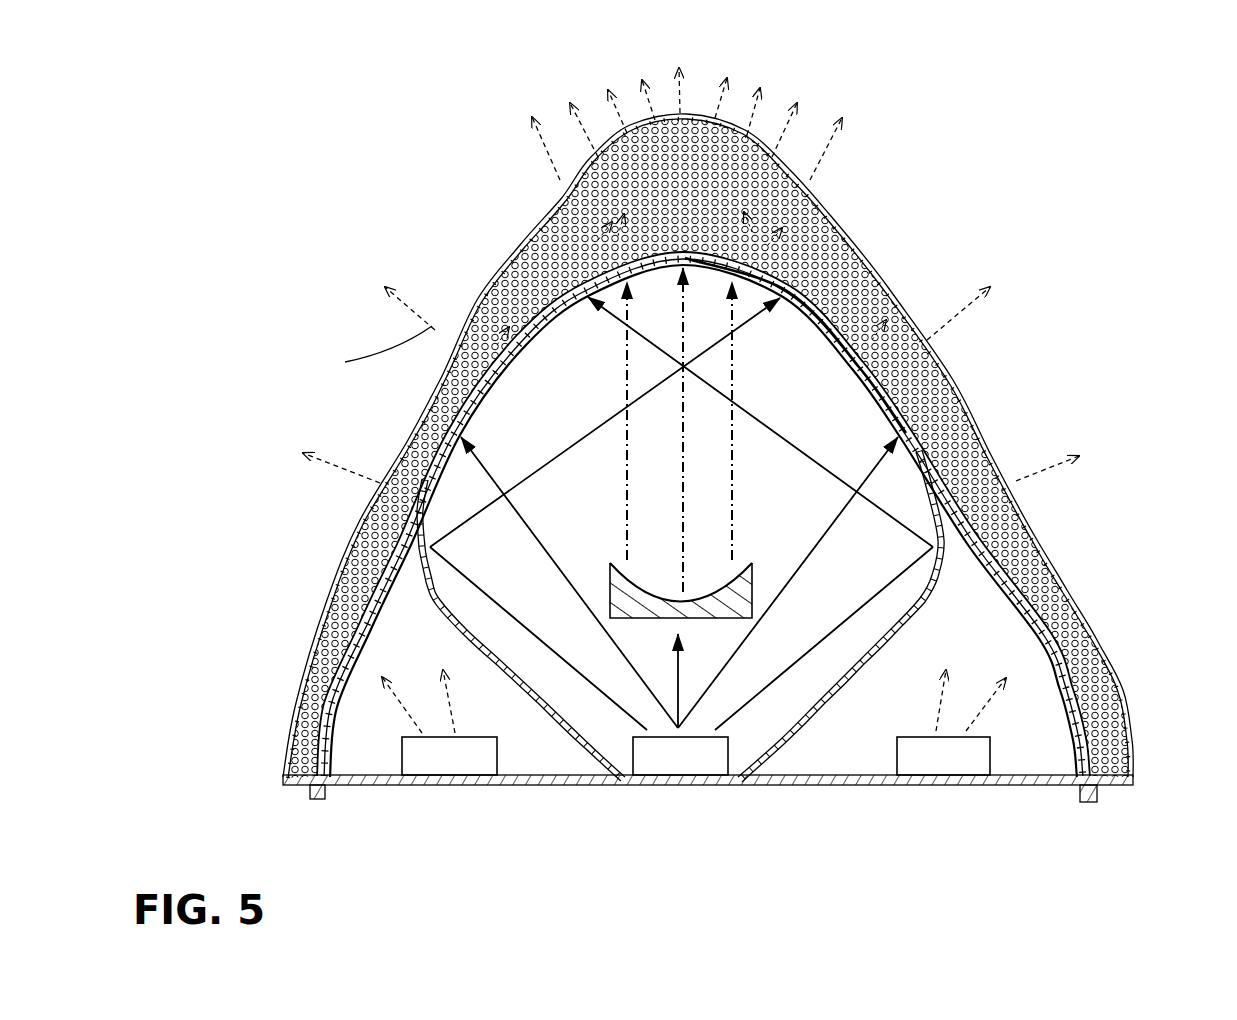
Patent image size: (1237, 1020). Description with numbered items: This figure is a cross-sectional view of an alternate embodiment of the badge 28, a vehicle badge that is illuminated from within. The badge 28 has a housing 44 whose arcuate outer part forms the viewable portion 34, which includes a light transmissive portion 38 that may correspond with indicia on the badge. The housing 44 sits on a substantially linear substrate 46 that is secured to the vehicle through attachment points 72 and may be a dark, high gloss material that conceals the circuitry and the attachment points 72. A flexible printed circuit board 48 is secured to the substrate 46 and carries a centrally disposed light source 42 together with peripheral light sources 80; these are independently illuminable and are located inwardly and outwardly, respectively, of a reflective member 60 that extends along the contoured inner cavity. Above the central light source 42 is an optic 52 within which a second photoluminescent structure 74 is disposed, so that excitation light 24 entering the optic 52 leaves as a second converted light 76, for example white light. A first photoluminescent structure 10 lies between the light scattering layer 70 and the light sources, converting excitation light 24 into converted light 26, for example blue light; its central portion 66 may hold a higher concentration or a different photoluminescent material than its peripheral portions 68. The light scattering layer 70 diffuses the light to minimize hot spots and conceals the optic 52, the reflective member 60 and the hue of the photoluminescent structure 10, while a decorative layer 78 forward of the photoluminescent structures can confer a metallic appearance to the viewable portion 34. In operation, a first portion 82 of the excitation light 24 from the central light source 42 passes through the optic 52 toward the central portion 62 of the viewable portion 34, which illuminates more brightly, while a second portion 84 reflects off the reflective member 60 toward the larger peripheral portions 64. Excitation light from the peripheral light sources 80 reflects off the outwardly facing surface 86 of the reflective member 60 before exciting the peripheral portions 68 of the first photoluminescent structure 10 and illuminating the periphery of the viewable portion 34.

The first photoluminescent structure 10 is at (1027, 597).
The excitation light 24 is at (400, 703).
The converted light 26 is at (448, 370).
The badge 28 is at (390, 160).
The viewable portion 34 is at (580, 162).
The light transmissive portion 38 is at (840, 213).
The light source 42 is at (712, 760).
The housing 44 is at (535, 200).
The substrate 46 is at (685, 783).
The flexible printed circuit board 48 is at (930, 788).
The optic 52 is at (610, 592).
The reflective member 60 is at (452, 620).
The central portion of the viewable portion 62 is at (670, 110).
The peripheral portions of the viewable portion 64 is at (405, 437).
The central portion of the photoluminescent structure 66 is at (693, 247).
The peripheral portions of the photoluminescent structure 68 is at (490, 340).
The light scattering layer 70 is at (540, 253).
The attachment points 72 is at (316, 797).
The second photoluminescent structure 74 is at (635, 627).
The second converted light 76 is at (522, 320).
The decorative layer 78 is at (905, 420).
The peripheral light sources 80 is at (442, 757).
The first portion of excitation light 82 is at (687, 667).
The second portion of excitation light 84 is at (810, 658).
The outwardly facing surface 86 is at (530, 690).